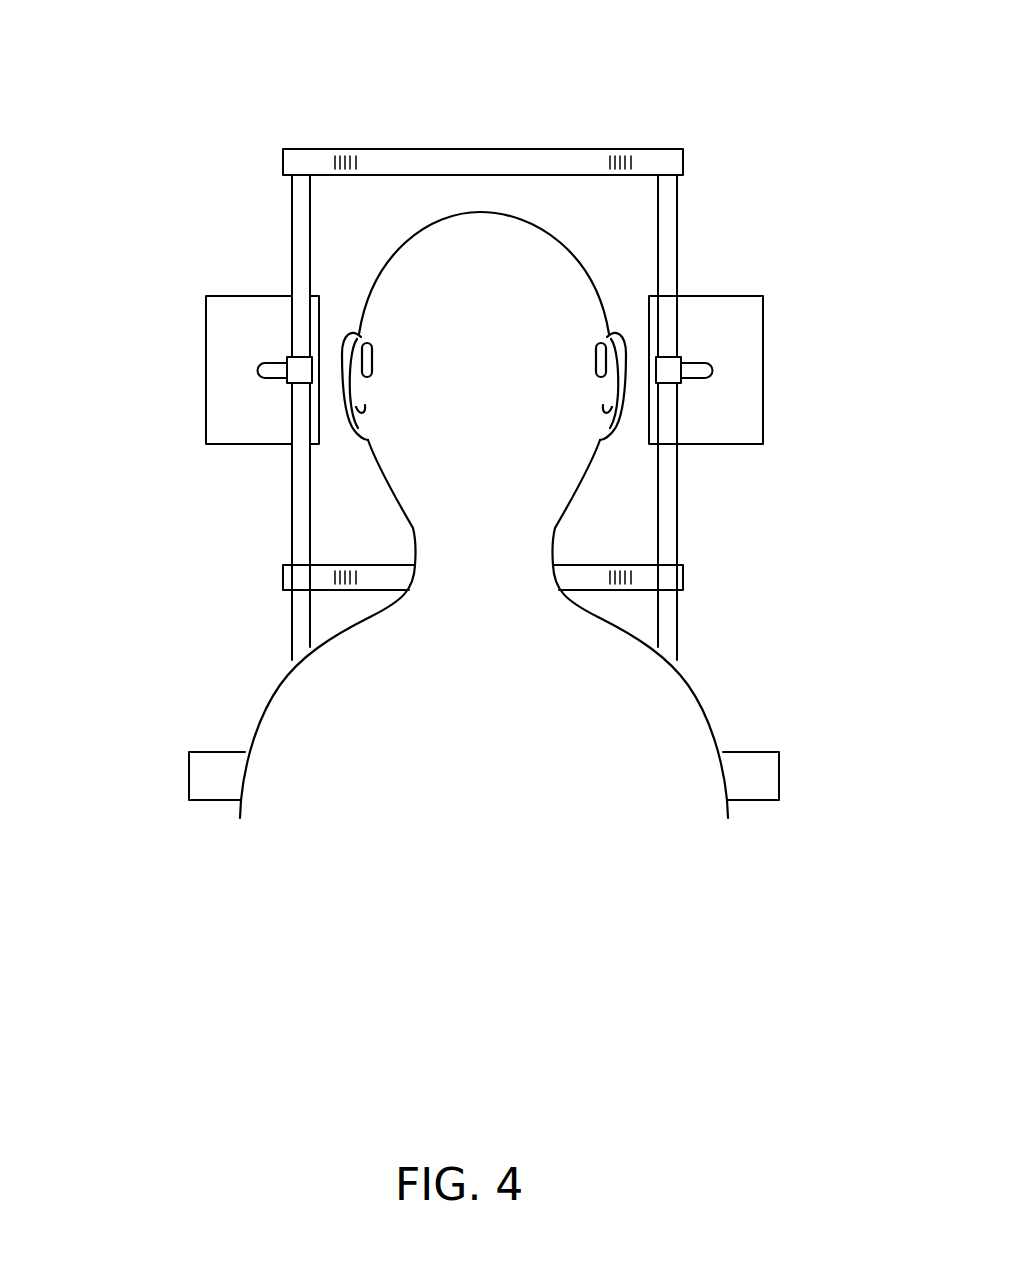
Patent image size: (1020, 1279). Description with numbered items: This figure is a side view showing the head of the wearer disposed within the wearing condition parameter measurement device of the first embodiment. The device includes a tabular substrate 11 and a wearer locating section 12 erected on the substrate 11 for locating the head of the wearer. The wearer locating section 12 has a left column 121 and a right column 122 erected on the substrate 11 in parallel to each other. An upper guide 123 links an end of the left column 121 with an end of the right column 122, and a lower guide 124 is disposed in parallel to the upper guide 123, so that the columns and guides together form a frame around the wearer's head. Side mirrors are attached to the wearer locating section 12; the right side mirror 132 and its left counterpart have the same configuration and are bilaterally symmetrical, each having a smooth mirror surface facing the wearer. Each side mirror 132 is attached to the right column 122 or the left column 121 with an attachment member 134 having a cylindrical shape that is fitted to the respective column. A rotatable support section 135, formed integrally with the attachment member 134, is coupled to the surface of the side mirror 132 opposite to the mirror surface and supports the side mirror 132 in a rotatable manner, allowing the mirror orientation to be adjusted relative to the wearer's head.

The tabular substrate 11 is at (222, 752).
The wearer locating section 12 is at (492, 332).
The left column 121 is at (292, 492).
The right column 122 is at (677, 490).
The upper guide 123 is at (528, 149).
The lower guide 124 is at (670, 560).
The right side mirror 132 is at (206, 327).
The attachment member 134 is at (316, 357).
The rotatable support section 135 is at (270, 362).